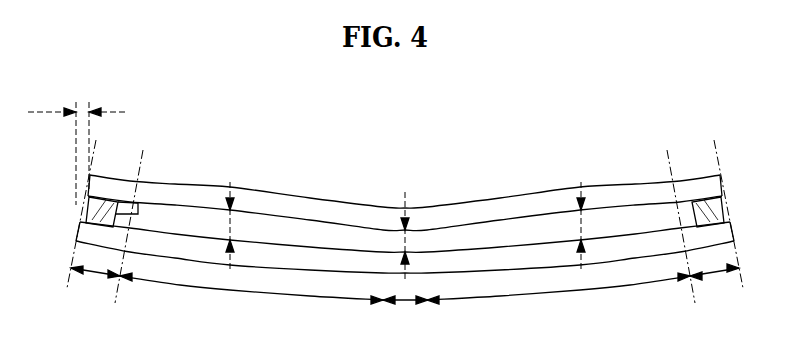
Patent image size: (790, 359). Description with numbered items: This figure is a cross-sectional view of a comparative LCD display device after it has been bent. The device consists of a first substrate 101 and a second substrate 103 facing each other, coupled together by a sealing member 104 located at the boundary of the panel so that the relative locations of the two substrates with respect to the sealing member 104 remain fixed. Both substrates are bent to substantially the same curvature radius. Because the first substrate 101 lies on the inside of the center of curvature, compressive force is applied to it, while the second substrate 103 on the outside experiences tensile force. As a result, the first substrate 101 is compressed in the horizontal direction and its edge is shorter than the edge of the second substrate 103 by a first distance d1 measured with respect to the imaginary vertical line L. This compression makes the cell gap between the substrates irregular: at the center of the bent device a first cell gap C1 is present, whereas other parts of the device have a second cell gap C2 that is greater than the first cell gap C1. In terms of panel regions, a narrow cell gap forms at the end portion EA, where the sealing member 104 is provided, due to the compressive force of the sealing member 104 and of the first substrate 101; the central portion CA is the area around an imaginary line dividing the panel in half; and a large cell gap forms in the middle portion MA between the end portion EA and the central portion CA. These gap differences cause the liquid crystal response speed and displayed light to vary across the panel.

The first substrate 101 is at (577, 192).
The second substrate 103 is at (607, 250).
The sealing member 104 is at (126, 214).
The imaginary vertical line L is at (75, 199).
The first distance d1 is at (78, 138).
The first cell gap C1 is at (407, 242).
The second cell gap C2 is at (231, 227).
The end portion EA is at (405, 224).
The middle portion MA is at (405, 299).
The central portion CA is at (405, 314).